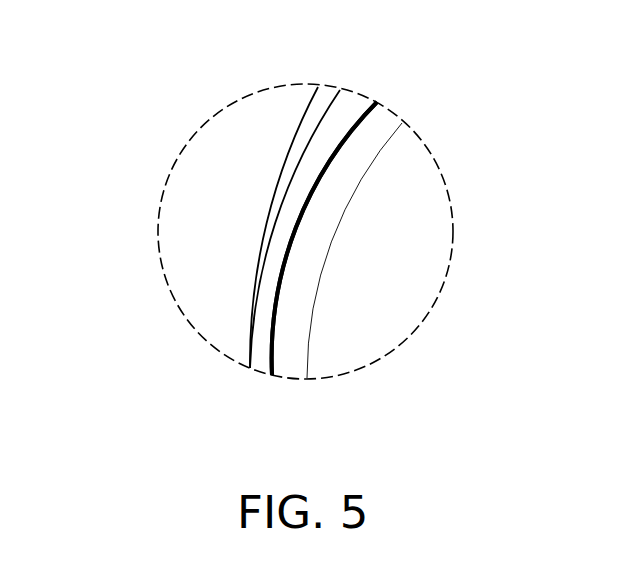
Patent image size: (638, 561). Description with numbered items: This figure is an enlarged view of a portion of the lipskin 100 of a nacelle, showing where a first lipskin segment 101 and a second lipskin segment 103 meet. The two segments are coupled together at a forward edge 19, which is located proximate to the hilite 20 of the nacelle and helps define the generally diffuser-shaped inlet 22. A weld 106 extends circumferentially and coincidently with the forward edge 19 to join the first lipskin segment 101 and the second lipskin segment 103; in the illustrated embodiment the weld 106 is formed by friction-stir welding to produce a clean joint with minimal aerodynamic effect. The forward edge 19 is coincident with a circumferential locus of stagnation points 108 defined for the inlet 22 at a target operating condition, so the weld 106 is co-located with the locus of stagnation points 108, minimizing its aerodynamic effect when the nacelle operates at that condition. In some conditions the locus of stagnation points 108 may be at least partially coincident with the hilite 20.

The forward edge 19 is at (315, 187).
The hilite 20 is at (293, 167).
The inlet 22 is at (387, 290).
The lipskin 100 is at (228, 273).
The first lipskin segment 101 is at (317, 382).
The second lipskin segment 103 is at (302, 112).
The weld 106 is at (300, 208).
The locus of stagnation points 108 is at (356, 128).